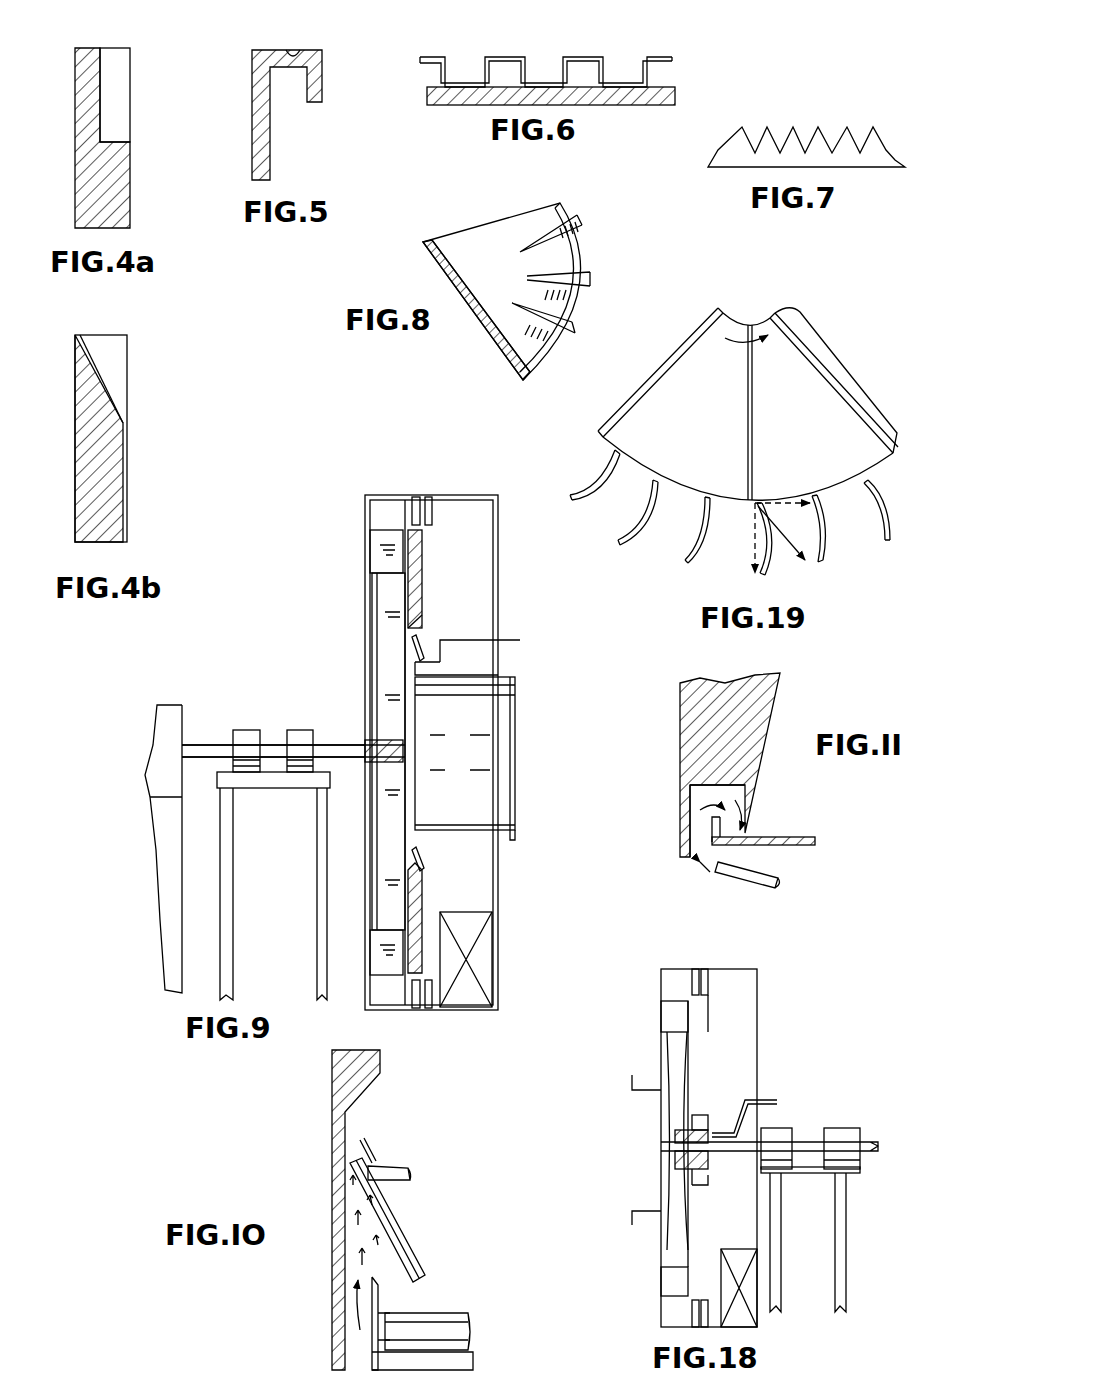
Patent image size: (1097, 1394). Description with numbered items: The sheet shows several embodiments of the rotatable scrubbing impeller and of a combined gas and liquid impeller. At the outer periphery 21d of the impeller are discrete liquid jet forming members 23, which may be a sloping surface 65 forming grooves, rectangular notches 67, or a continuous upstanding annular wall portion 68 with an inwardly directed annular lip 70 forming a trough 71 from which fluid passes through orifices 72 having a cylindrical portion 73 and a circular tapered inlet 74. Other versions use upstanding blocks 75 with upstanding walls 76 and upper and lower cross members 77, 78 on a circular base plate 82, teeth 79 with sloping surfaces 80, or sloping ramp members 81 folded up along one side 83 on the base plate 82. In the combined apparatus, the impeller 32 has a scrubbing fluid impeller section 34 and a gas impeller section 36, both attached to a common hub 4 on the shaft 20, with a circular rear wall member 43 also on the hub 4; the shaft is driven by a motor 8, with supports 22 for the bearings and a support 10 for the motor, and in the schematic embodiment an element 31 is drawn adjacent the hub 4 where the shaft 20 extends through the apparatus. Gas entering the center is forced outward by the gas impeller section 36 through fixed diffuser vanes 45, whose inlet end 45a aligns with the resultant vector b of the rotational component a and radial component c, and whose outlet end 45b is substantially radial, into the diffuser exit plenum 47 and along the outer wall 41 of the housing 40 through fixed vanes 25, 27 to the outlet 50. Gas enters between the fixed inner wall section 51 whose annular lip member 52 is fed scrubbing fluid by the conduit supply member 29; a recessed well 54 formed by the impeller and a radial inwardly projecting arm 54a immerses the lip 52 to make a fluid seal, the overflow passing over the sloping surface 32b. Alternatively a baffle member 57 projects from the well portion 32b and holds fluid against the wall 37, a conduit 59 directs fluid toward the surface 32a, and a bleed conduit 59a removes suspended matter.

In FIG. 9, the common hub 4 is at (400, 748).
In FIG. 18, the common hub 4 is at (675, 1138).
In FIG. 9, the motor 8 is at (170, 712).
In FIG. 9, the motor support 10 is at (168, 893).
In FIG. 9, the shaft 20 is at (205, 745).
In FIG. 18, the shaft 20 is at (805, 1140).
In FIG. 4a, the outer periphery of impeller 21d is at (75, 182).
In FIG. 4b, the outer periphery of impeller 21d is at (100, 535).
In FIG. 5, the outer periphery of impeller 21d is at (252, 108).
In FIG. 9, the shaft bearing supports 22 is at (320, 835).
In FIG. 18, the shaft bearing supports 22 is at (835, 1222).
In FIG. 4a, the liquid jet forming members 23 is at (75, 103).
In FIG. 4b, the liquid jet forming members 23 is at (118, 455).
In FIG. 5, the liquid jet forming members 23 is at (326, 46).
In FIG. 6, the liquid jet forming members 23 is at (612, 58).
In FIG. 7, the liquid jet forming members 23 is at (878, 60).
In FIG. 8, the liquid jet forming members 23 is at (537, 216).
In FIG. 9, the fixed vanes 25 is at (410, 500).
In FIG. 18, the fixed vanes 25 is at (685, 975).
In FIG. 9, the fixed vanes 27 is at (432, 500).
In FIG. 18, the fixed vanes 27 is at (706, 982).
In FIG. 9, the scrubbing fluid conduit supply member 29 is at (448, 680).
In FIG. 11, the scrubbing fluid conduit supply member 29 is at (778, 880).
In FIG. 10, the scrubbing fluid conduit supply member 29 is at (440, 1320).
In FIG. 18, the scrubbing fluid conduit supply member 29 is at (755, 1100).
In FIG. 18, the hub element 31 is at (703, 1115).
In FIG. 9, the impeller 32 is at (428, 560).
In FIG. 11, the impeller 32 is at (775, 700).
In FIG. 10, the impeller 32 is at (330, 1123).
In FIG. 10, the impeller surface 32a is at (380, 1055).
In FIG. 9, the well portion / sloping surface 32b is at (422, 637).
In FIG. 11, the well portion / sloping surface 32b is at (775, 740).
In FIG. 10, the well portion / sloping surface 32b is at (365, 1090).
In FIG. 9, the scrubbing fluid impeller section 34 is at (425, 905).
In FIG. 19, the gas impeller section 36 is at (793, 330).
In FIG. 9, the gas impeller section 36 is at (385, 650).
In FIG. 18, the gas impeller section 36 is at (680, 1105).
In FIG. 10, the wall 37 is at (332, 1257).
In FIG. 9, the housing 40 is at (470, 492).
In FIG. 9, the outer wall of housing 41 is at (417, 497).
In FIG. 9, the circular rear wall member 43 is at (385, 672).
In FIG. 19, the fixed diffuser vanes 45 is at (848, 550).
In FIG. 9, the fixed diffuser vanes 45 is at (385, 548).
In FIG. 18, the fixed diffuser vanes 45 is at (672, 1022).
In FIG. 19, the inlet end of diffuser vane 45a is at (750, 500).
In FIG. 19, the outlet end of diffuser vane 45b is at (758, 575).
In FIG. 9, the diffuser exit plenum 47 is at (395, 985).
In FIG. 9, the outlet 50 is at (485, 948).
In FIG. 18, the outlet 50 is at (737, 1249).
In FIG. 9, the fixed inner wall section 51 is at (500, 830).
In FIG. 11, the fixed inner wall section 51 is at (785, 835).
In FIG. 10, the fixed inner wall section 51 is at (470, 1375).
In FIG. 9, the annular lip member 52 is at (420, 838).
In FIG. 11, the annular lip member 52 is at (712, 826).
In FIG. 10, the annular lip member 52 is at (380, 1295).
In FIG. 11, the radially recessed well 54 is at (690, 792).
In FIG. 11, the radial inwardly projecting arm 54a is at (750, 797).
In FIG. 9, the baffle member 57 is at (408, 660).
In FIG. 10, the baffle member 57 is at (355, 1220).
In FIG. 9, the conduit 59 is at (425, 652).
In FIG. 10, the conduit 59 is at (395, 1205).
In FIG. 10, the bleed conduit 59a is at (395, 1165).
In FIG. 4b, the sloping surface 65 is at (95, 368).
In FIG. 4a, the rectangular notches 67 is at (103, 96).
In FIG. 5, the upstanding annular wall portion 68 is at (266, 50).
In FIG. 5, the inwardly directed annular lip 70 is at (322, 74).
In FIG. 5, the trough 71 is at (290, 92).
In FIG. 5, the orifices 72 is at (303, 50).
In FIG. 5, the cylindrical portion 73 is at (290, 55).
In FIG. 5, the circular tapered inlet 74 is at (252, 72).
In FIG. 6, the upstanding blocks 75 is at (505, 68).
In FIG. 6, the upstanding walls 76 is at (530, 60).
In FIG. 6, the upper cross member 77 is at (505, 70).
In FIG. 6, the lower cross member 78 is at (462, 84).
In FIG. 7, the teeth 79 is at (742, 127).
In FIG. 7, the sloping surfaces 80 is at (735, 135).
In FIG. 8, the sloping ramp members 81 is at (565, 235).
In FIG. 6, the circular base plate 82 is at (630, 105).
In FIG. 8, the circular base plate 82 is at (578, 350).
In FIG. 8, the folded side 83 is at (570, 250).
In FIG. 19, the rotational component a is at (779, 503).
In FIG. 19, the resultant vector b is at (782, 540).
In FIG. 19, the radial component c is at (755, 545).